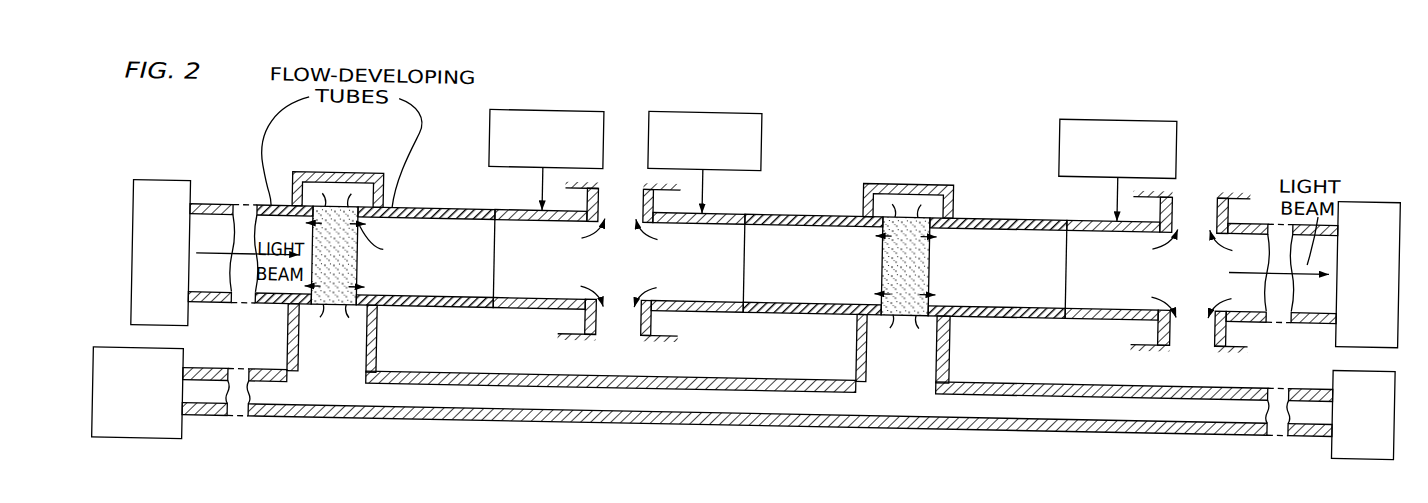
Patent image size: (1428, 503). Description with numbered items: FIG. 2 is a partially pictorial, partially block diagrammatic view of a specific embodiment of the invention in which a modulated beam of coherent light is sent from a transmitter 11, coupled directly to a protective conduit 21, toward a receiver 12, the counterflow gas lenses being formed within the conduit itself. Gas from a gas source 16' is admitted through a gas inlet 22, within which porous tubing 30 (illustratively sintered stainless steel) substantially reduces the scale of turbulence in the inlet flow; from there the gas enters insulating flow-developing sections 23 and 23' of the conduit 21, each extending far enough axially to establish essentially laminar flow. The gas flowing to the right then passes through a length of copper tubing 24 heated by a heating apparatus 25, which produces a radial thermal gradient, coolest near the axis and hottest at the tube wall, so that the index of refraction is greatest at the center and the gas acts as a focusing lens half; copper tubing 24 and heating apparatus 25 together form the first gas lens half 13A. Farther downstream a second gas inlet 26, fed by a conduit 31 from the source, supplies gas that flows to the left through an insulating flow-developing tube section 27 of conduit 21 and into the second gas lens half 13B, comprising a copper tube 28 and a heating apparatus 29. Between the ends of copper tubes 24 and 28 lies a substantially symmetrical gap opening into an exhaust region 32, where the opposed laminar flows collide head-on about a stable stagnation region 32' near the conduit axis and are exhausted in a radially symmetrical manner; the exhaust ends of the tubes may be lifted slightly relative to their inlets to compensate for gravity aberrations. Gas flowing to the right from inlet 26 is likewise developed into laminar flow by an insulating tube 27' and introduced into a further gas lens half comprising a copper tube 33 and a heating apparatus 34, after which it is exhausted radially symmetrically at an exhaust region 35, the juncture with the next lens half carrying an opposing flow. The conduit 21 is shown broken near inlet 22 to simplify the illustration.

The transmitter 11 is at (133, 188).
The receiver 12 is at (1385, 181).
The gas lens half 13A is at (525, 232).
The gas lens half 13B is at (712, 233).
The gas source 16' is at (137, 418).
The protective conduit 21 is at (215, 203).
The gas inlet 22 is at (354, 166).
The insulating flow-developing section 23 is at (276, 278).
The insulating flow-developing section 23' is at (425, 279).
The copper tubing 24 is at (523, 306).
The heating apparatus 25 is at (579, 104).
The gas inlet 26 is at (917, 161).
The insulating flow-developing tube section 27 is at (776, 286).
The insulating tube 27' is at (997, 290).
The copper tube 28 is at (680, 305).
The heating apparatus 29 is at (700, 104).
The porous tubing 30 is at (335, 306).
The conduit 31 is at (1150, 420).
The exhaust region 32 is at (580, 262).
The stagnation region 32' is at (733, 293).
The copper tube 33 is at (1100, 305).
The heating apparatus 34 is at (1125, 104).
The exhaust region 35 is at (1175, 246).